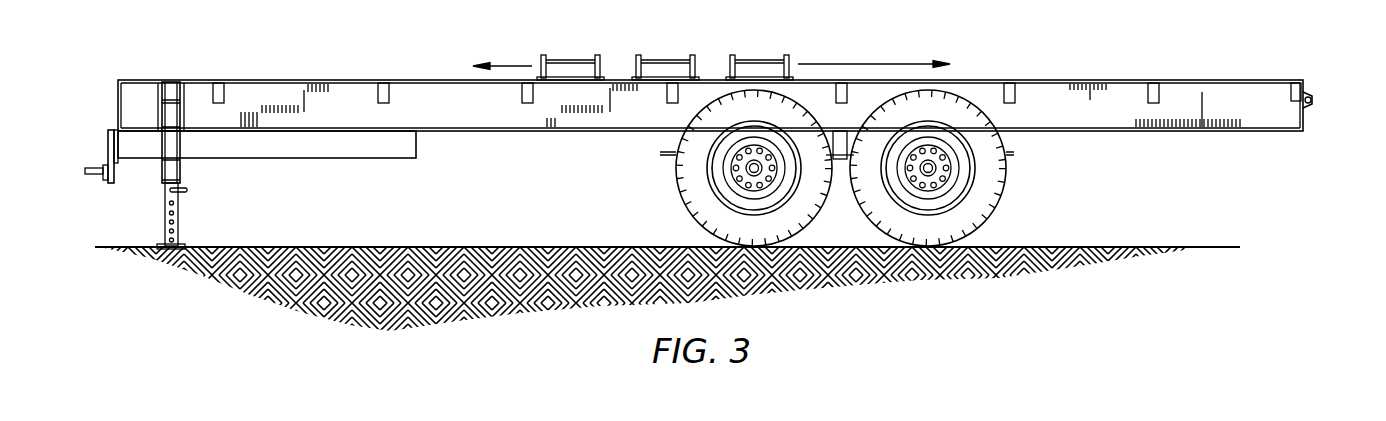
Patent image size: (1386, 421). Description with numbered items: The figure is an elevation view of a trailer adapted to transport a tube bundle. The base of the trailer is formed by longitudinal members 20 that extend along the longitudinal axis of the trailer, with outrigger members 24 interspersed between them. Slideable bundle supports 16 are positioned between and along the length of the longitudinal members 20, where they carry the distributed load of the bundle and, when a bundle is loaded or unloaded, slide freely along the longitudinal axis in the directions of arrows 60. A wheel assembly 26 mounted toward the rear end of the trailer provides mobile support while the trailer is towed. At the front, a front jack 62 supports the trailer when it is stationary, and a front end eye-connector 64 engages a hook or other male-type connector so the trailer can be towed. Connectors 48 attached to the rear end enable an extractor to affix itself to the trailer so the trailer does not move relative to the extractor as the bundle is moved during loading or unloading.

The slideable bundle support 16 is at (572, 62).
The longitudinal member 20 is at (443, 102).
The outrigger member 24 is at (1148, 95).
The wheel assembly 26 is at (990, 177).
The connector 48 is at (1309, 103).
The arrow 60 is at (867, 64).
The front jack 62 is at (180, 176).
The front end eye-connector 64 is at (86, 175).